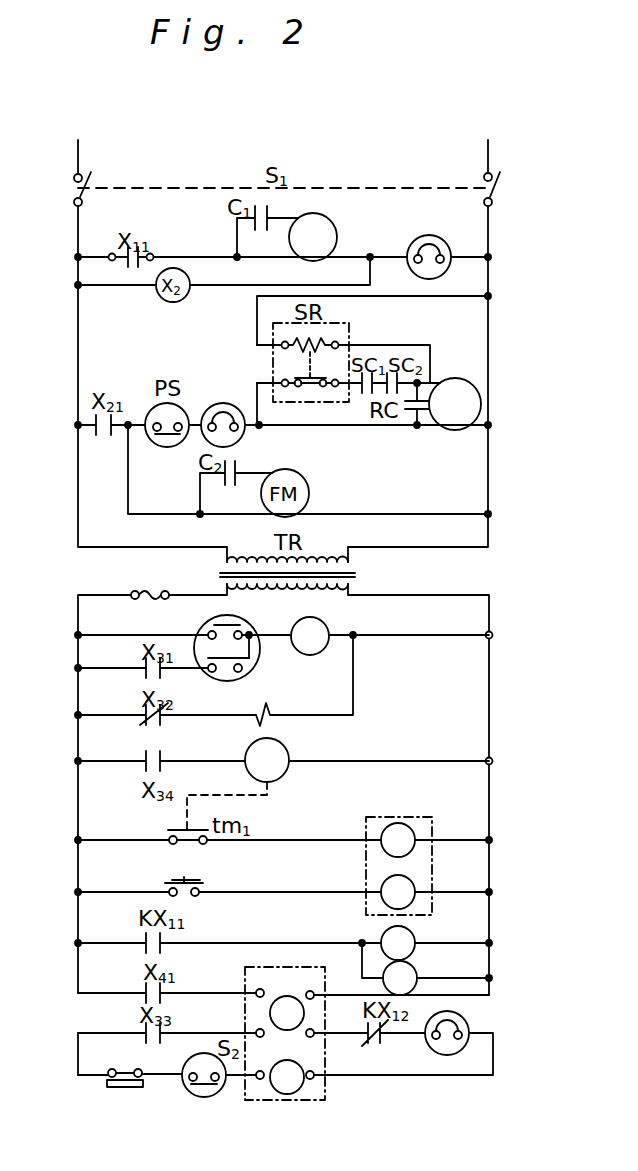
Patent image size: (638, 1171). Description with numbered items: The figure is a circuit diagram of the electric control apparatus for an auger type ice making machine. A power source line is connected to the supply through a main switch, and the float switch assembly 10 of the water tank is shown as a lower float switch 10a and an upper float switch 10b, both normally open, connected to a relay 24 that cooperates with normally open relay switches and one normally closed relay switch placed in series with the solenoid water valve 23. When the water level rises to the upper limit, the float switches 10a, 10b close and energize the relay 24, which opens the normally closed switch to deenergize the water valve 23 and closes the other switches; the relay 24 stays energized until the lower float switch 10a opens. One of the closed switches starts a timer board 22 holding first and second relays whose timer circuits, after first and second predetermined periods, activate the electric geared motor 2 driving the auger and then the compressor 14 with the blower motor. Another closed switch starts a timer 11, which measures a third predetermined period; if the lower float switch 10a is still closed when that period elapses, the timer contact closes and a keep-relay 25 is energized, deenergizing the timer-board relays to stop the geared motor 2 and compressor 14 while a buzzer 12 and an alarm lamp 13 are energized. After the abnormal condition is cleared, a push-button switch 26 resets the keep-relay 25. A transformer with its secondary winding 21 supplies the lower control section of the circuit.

The electric geared motor 2 is at (321, 214).
The compressor 14 is at (481, 393).
The float switch assembly 10 is at (198, 636).
The lower float switch 10a is at (227, 673).
The upper float switch 10b is at (205, 619).
The secondary winding of transformer TR 21 is at (356, 574).
The relay 24 is at (324, 626).
The solenoid water valve 23 is at (268, 703).
The timer 11 is at (285, 746).
The keep-relay 25 is at (433, 831).
The push-button switch 26 is at (168, 867).
The buzzer 12 is at (412, 931).
The alarm lamp 13 is at (415, 966).
The timer board 22 is at (296, 1101).